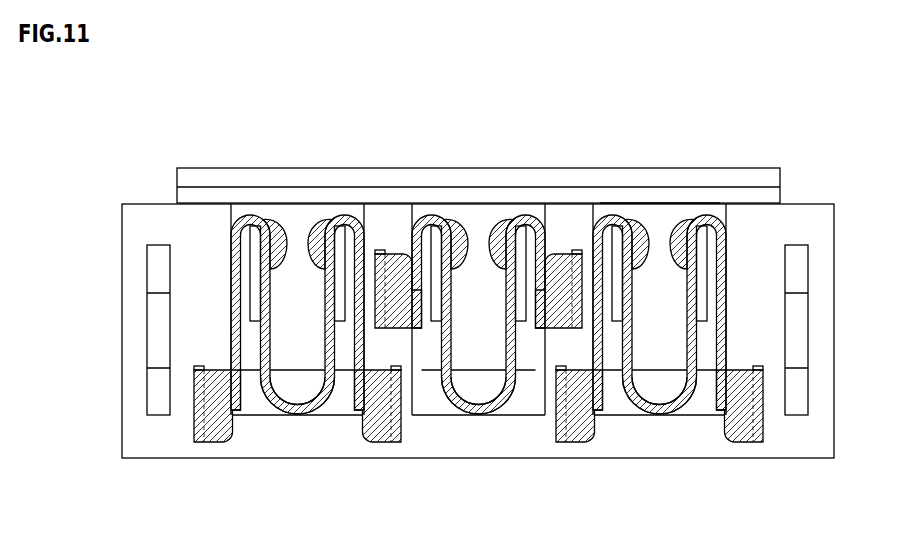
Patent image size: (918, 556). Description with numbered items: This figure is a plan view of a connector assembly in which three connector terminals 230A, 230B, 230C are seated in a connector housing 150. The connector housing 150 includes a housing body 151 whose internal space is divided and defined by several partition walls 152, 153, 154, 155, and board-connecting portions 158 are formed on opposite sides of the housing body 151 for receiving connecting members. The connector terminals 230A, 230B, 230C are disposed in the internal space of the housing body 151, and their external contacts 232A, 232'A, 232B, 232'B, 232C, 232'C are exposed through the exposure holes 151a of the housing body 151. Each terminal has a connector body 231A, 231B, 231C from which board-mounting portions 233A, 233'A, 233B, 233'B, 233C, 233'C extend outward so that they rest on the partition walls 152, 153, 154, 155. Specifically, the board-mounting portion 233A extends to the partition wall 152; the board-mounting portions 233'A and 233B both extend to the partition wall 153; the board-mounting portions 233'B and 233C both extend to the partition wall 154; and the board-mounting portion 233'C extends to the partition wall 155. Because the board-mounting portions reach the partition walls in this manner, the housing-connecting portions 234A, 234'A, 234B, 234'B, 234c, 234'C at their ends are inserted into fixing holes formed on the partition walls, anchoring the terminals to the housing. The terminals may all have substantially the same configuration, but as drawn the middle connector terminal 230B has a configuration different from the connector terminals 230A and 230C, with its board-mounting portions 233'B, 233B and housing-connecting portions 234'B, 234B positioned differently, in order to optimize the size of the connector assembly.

The connector housing 150 is at (841, 170).
The housing body 151 is at (738, 176).
The exposure holes 151a is at (655, 212).
The partition wall 152 is at (740, 348).
The partition wall 153 is at (568, 350).
The partition wall 154 is at (382, 352).
The partition wall 155 is at (187, 332).
The board-connecting portions 158 is at (132, 290).
The connector terminal 230A is at (633, 323).
The connector terminal 230B is at (450, 295).
The connector terminal 230C is at (269, 323).
The connector body 231A is at (660, 458).
The connector body 231B is at (479, 448).
The connector body 231C is at (295, 458).
The external contact 232A is at (685, 188).
The external contact 232'A is at (619, 188).
The external contact 232B is at (490, 188).
The external contact 232'B is at (431, 188).
The external contact 232C is at (308, 188).
The external contact 232'C is at (247, 188).
The board-mounting portion 233A is at (716, 444).
The board-mounting portion 233'A is at (574, 444).
The board-mounting portion 233B is at (537, 200).
The board-mounting portion 233'B is at (402, 200).
The board-mounting portion 233C is at (354, 444).
The board-mounting portion 233'C is at (223, 444).
The housing-connecting portion 234A is at (750, 442).
The housing-connecting portion 234'A is at (529, 452).
The housing-connecting portion 234B is at (575, 163).
The housing-connecting portion 234'B is at (343, 164).
The housing-connecting portion 234c is at (393, 442).
The housing-connecting portion 234'C is at (162, 442).